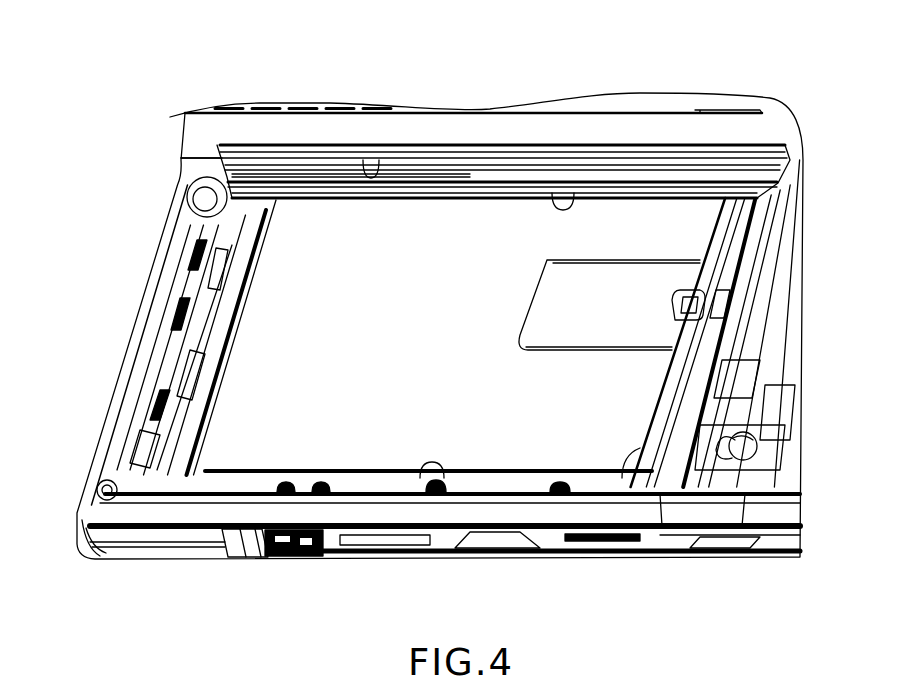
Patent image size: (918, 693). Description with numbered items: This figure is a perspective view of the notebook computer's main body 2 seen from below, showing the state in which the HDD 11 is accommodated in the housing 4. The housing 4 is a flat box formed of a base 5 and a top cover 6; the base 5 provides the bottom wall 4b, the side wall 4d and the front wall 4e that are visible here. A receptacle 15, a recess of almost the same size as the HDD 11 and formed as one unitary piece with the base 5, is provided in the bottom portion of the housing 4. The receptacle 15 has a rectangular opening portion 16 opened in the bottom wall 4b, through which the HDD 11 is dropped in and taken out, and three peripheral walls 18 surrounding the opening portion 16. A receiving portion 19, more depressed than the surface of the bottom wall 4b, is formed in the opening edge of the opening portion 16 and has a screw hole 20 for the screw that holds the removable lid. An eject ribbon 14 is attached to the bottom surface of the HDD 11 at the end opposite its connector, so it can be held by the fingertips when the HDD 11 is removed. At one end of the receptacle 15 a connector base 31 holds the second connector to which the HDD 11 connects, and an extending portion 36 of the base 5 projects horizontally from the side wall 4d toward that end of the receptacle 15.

The main body 2 is at (170, 131).
The housing 4 is at (179, 600).
The bottom wall 4b is at (658, 132).
The right side wall 4d is at (126, 350).
The front wall 4e is at (535, 555).
The base 5 is at (180, 530).
The top cover 6 is at (245, 577).
The HDD 11 is at (393, 438).
The eject ribbon 14 is at (555, 334).
The receptacle 15 is at (550, 490).
The opening portion 16 is at (363, 176).
The peripheral walls 18 is at (565, 195).
The receiving portion 19 is at (470, 178).
The screw hole 20 is at (700, 277).
The connector base 31 is at (207, 317).
The extending portion 36 is at (148, 428).